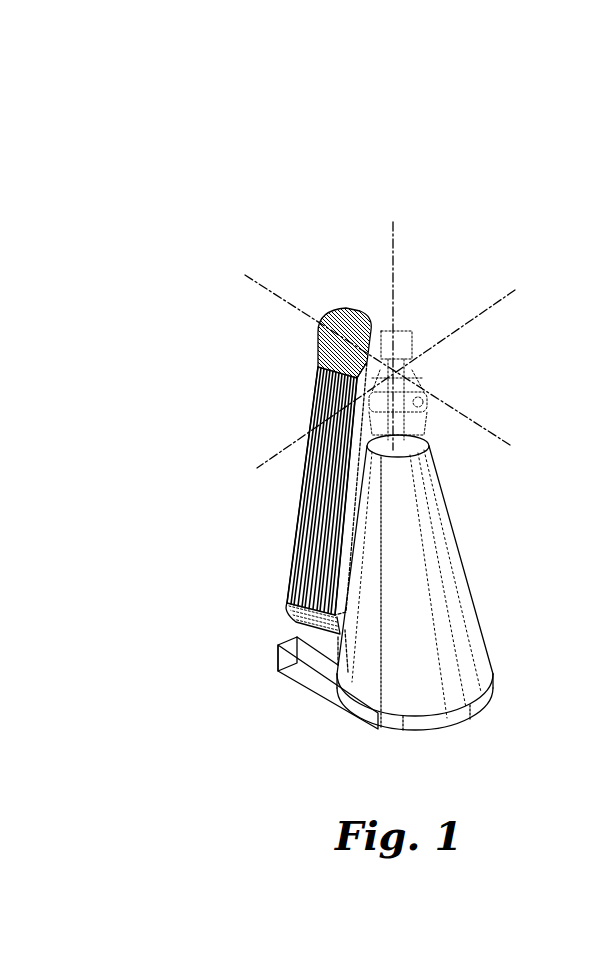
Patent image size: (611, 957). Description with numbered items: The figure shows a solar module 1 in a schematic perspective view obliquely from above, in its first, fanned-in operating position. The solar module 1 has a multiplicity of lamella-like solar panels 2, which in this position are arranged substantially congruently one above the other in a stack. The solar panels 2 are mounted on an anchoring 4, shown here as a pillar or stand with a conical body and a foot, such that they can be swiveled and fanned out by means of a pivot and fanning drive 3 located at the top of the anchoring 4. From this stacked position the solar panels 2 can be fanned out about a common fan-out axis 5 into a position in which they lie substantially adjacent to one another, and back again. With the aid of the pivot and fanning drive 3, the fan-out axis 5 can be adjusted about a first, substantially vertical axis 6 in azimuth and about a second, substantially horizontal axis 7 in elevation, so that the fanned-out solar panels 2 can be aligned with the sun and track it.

The solar module 1 is at (358, 476).
The solar panels 2 is at (328, 439).
The pivot and fanning drive 3 is at (440, 372).
The anchoring 4 is at (455, 579).
The fan-out axis 5 is at (287, 301).
The first, substantially vertical axis 6 is at (397, 254).
The second, substantially horizontal axis 7 is at (490, 305).